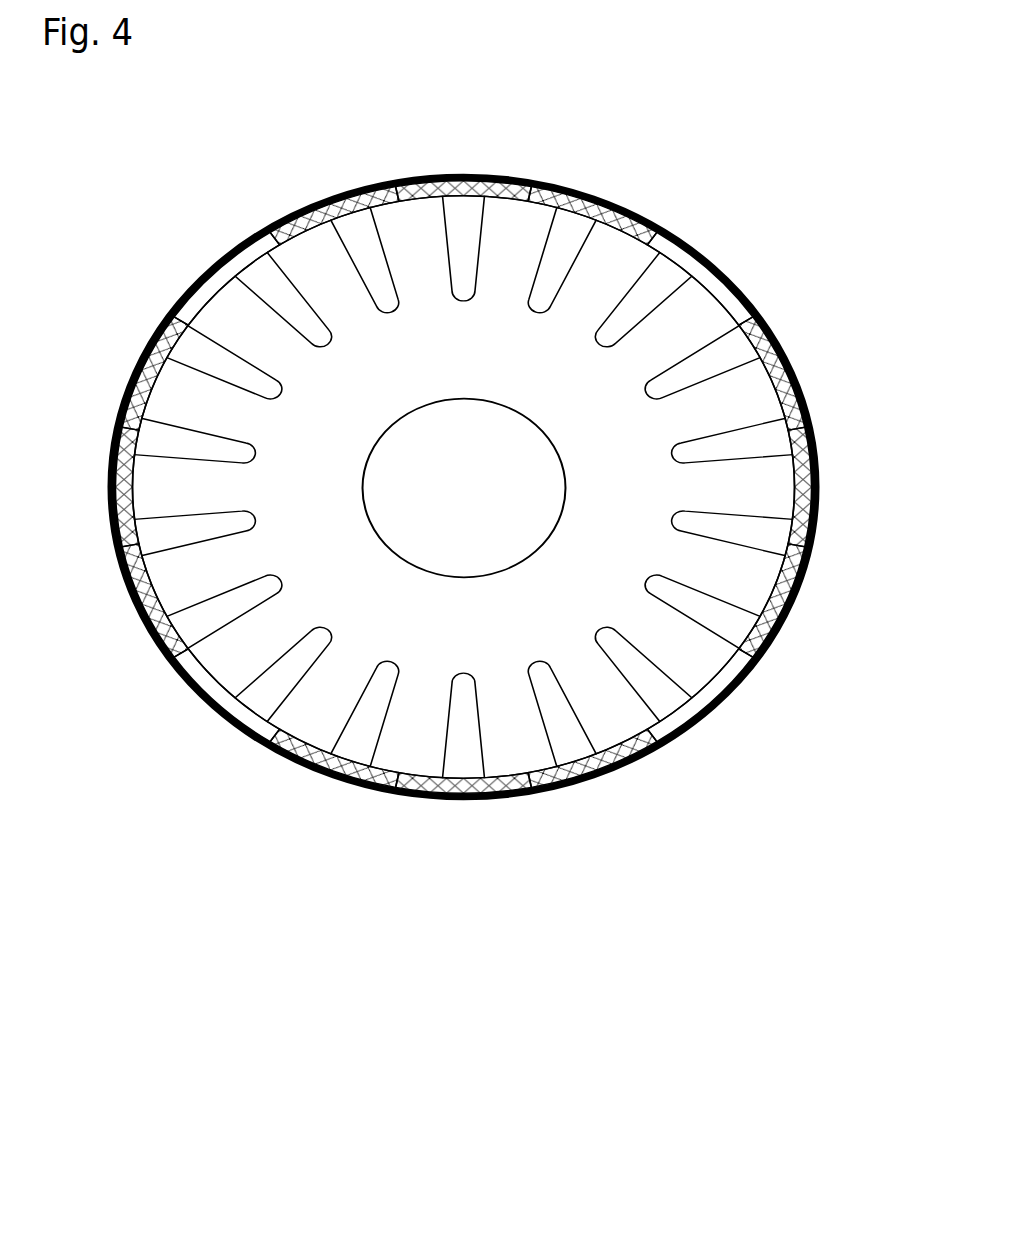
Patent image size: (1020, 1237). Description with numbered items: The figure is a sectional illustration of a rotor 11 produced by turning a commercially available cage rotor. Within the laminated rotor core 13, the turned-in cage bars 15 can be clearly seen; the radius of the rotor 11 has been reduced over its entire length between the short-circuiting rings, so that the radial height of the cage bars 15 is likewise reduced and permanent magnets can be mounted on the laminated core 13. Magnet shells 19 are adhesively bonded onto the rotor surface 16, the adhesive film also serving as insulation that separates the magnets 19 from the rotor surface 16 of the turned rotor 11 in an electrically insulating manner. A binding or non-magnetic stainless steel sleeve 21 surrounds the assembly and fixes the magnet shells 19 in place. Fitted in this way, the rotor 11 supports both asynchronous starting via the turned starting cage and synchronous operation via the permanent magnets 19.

The rotor 11 is at (481, 580).
The laminated rotor core 13 is at (645, 487).
The turned-in cage bars 15 is at (652, 283).
The rotor surface 16 is at (720, 293).
The magnet shells 19 is at (568, 787).
The non-magnetic stainless steel sleeve 21 is at (627, 205).